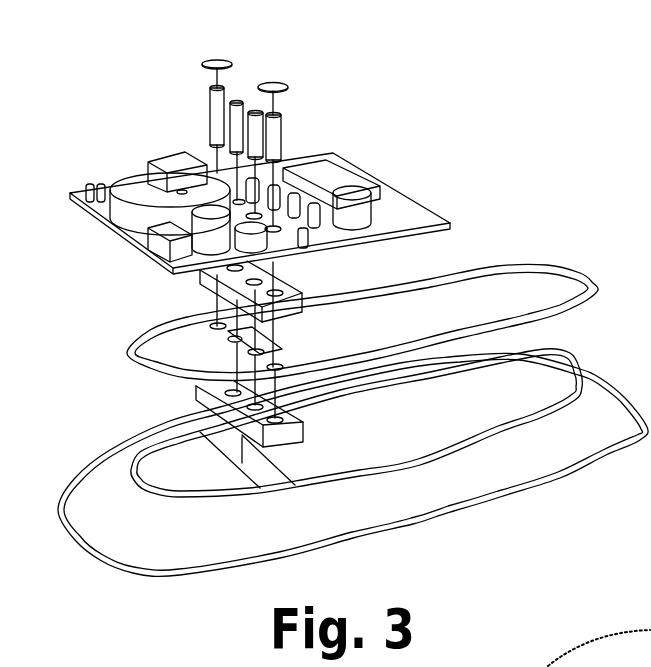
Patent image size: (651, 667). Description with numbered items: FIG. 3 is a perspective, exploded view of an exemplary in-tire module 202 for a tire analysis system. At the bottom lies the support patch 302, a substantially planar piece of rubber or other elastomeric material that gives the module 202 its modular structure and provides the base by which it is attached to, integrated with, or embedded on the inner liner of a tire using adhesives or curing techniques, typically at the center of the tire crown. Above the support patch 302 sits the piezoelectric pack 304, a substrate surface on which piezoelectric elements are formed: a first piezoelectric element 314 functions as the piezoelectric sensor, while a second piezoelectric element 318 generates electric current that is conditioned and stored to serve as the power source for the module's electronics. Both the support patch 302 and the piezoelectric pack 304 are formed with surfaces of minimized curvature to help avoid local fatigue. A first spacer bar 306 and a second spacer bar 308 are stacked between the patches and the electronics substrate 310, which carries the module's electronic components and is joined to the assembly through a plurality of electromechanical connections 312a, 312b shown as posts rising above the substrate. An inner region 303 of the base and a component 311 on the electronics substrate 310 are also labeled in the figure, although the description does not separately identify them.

The in-tire module 202 is at (503, 97).
The support patch 302 is at (352, 533).
The raised inner wall of base 303 is at (437, 420).
The piezoelectric pack 304 is at (543, 290).
The first spacer bar 306 is at (205, 410).
The second spacer bar 308 is at (198, 283).
The electronics substrate 310 is at (423, 220).
The electronic component 311 is at (170, 154).
The electromechanical connection 312a is at (253, 112).
The electromechanical connection 312b is at (204, 63).
The first piezoelectric element 314 is at (222, 367).
The second piezoelectric element 318 is at (403, 325).